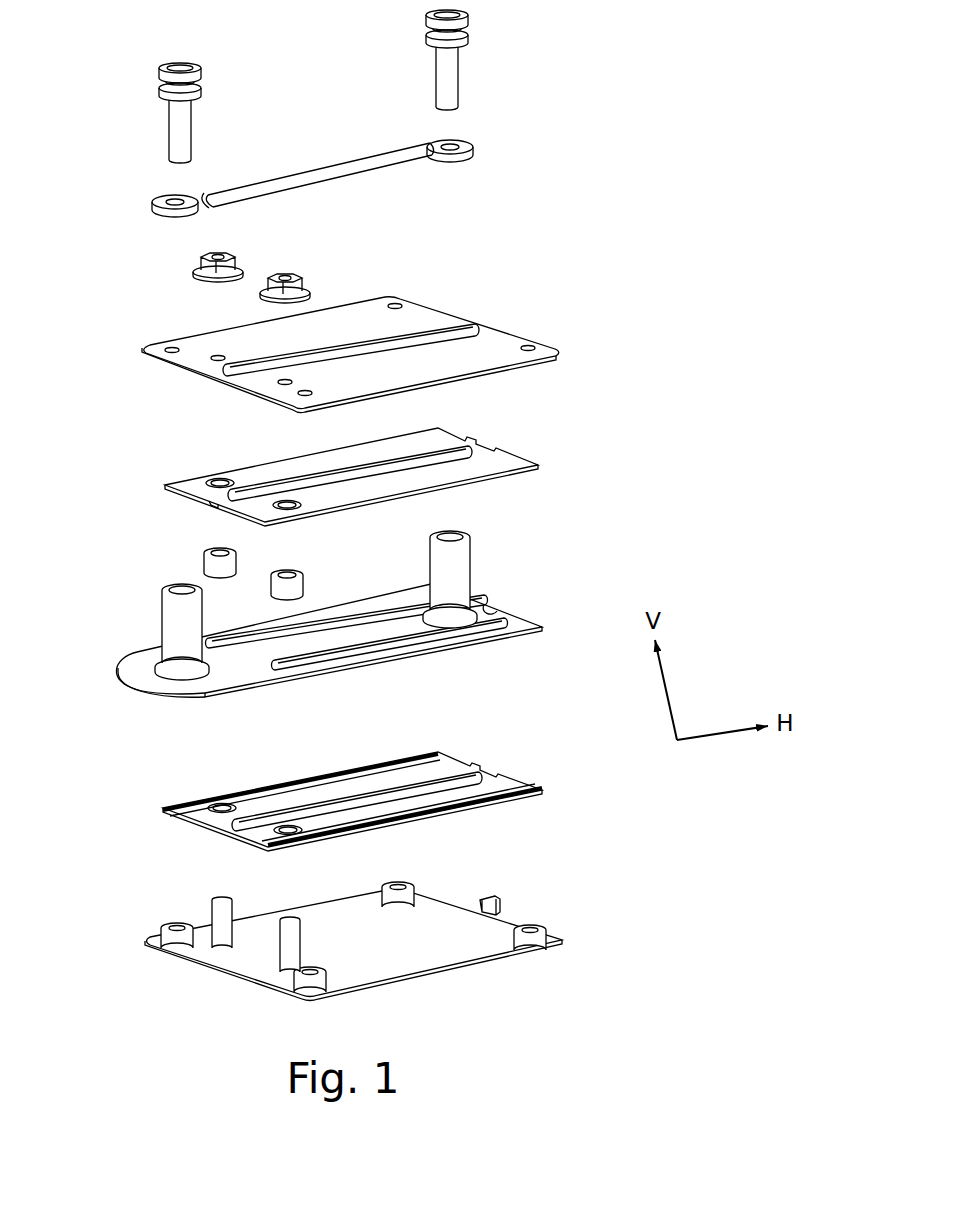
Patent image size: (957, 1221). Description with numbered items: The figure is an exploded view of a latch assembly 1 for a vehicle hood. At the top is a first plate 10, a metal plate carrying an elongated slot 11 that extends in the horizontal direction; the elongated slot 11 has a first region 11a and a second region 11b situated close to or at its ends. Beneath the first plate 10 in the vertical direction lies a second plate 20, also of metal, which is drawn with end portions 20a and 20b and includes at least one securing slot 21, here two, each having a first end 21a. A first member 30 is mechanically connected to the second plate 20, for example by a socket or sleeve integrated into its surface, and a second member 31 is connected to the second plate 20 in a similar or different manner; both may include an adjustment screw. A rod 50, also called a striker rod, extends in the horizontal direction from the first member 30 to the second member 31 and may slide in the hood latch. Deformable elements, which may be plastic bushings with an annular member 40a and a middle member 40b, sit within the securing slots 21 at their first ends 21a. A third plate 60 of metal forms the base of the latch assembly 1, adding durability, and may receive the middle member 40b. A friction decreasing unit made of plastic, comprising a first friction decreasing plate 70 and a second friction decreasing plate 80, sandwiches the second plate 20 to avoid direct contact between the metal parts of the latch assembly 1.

The latch assembly 1 is at (388, 505).
The first plate 10 is at (397, 318).
The elongated slot 11 is at (355, 299).
The first region 11a is at (468, 326).
The second region 11b is at (243, 363).
The second plate 20 is at (336, 648).
The first end portion of base plate 20a is at (510, 616).
The second end portion of base plate 20b is at (128, 672).
The securing slot 21 is at (347, 685).
The first end 21a is at (271, 675).
The first member 30 is at (478, 550).
The second member 31 is at (157, 603).
The spacer 40a is at (196, 557).
The middle member 40b is at (206, 908).
The rod 50 is at (304, 158).
The third plate 60 is at (368, 916).
The first friction decreasing plate 70 is at (519, 754).
The second friction decreasing plate 80 is at (520, 436).